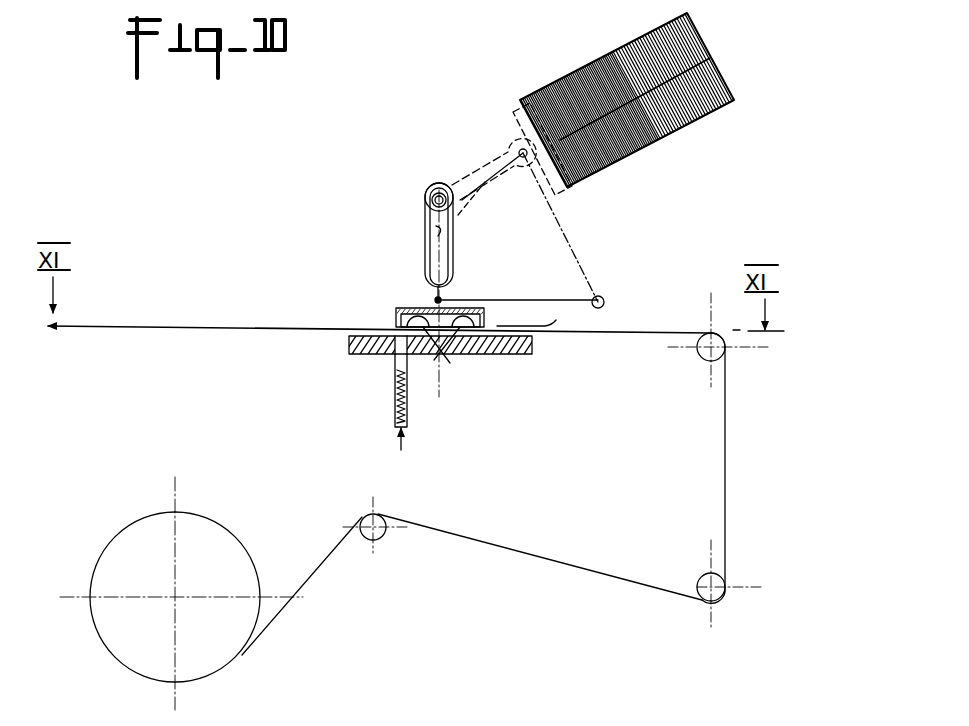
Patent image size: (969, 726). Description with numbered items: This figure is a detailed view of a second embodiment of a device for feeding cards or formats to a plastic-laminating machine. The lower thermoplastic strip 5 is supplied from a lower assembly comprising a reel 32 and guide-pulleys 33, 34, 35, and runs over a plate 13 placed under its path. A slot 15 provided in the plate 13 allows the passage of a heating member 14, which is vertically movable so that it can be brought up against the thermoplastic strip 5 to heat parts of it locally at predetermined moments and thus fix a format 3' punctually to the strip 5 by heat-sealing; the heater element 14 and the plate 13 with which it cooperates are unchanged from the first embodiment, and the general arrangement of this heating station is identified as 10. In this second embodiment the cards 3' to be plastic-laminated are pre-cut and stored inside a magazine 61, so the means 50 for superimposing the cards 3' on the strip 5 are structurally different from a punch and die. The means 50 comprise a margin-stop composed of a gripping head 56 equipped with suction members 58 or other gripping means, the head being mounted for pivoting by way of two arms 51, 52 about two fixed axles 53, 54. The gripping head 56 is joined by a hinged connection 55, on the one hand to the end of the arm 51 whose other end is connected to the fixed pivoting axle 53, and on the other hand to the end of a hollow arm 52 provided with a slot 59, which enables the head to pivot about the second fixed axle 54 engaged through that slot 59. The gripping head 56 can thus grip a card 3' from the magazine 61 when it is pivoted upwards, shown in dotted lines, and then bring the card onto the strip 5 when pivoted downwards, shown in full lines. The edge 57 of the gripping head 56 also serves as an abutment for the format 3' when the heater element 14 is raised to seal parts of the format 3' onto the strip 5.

The format 3' is at (379, 308).
The lower thermoplastic strip 5 is at (555, 555).
The base assembly 10 is at (340, 363).
The plate 13 is at (518, 350).
The heating member 14 is at (408, 410).
The slot 15 is at (395, 357).
The reel 32 is at (225, 530).
The guide-pulley 33 is at (380, 540).
The guide-pulley 34 is at (720, 597).
The guide-pulley 35 is at (703, 356).
The means for superimposing the cards on the strip 50 is at (322, 232).
The arm 51 is at (520, 300).
The hollow arm 52 is at (430, 243).
The fixed pivoting axle 53 is at (604, 298).
The second fixed axle 54 is at (437, 187).
The hinged connection 55 is at (436, 298).
The gripping head 56 is at (400, 308).
The edge of the gripping head 57 is at (400, 320).
The suction members 58 is at (453, 357).
The slot 59 is at (436, 226).
The magazine 61 is at (660, 140).